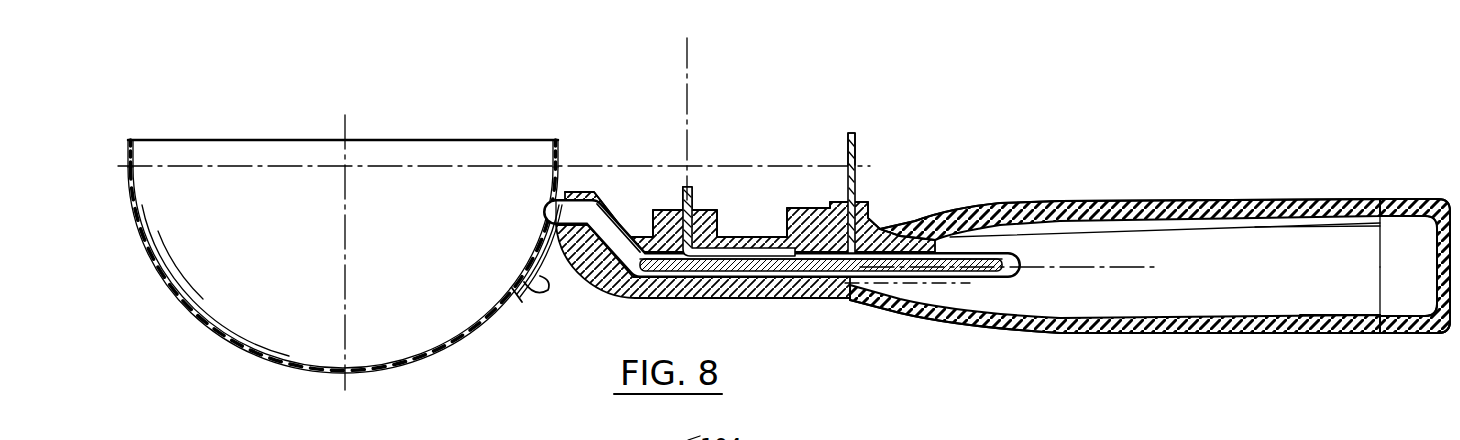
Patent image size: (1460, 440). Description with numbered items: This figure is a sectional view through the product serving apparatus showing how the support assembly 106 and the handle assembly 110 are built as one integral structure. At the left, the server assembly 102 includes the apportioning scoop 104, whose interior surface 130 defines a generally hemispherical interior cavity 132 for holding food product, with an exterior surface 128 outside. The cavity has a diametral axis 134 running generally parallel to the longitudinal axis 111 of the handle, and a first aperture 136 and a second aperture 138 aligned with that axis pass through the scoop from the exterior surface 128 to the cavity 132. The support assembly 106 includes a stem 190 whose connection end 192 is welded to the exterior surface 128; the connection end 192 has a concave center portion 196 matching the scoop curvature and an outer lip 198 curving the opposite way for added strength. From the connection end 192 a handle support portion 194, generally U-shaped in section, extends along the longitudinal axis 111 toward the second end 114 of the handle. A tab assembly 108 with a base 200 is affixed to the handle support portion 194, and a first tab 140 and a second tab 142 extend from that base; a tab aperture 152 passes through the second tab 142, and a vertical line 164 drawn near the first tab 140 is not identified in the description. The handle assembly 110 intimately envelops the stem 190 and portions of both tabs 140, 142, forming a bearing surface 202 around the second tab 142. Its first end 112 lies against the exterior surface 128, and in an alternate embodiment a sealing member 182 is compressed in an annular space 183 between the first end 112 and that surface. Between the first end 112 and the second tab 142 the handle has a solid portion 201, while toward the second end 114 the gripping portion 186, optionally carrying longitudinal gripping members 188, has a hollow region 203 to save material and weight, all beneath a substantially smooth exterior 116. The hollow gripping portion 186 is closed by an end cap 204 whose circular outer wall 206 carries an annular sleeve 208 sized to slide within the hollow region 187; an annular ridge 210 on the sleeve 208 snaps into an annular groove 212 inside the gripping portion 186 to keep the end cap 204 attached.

The server assembly 102 is at (290, 372).
The apportioning scoop 104 is at (386, 138).
The support assembly 106 is at (866, 192).
The tab assembly 108 is at (822, 284).
The handle assembly 110 is at (1002, 206).
The longitudinal axis 111 is at (1084, 306).
The first end 112 is at (591, 192).
The second end 114 is at (1418, 334).
The smooth exterior 116 is at (1166, 333).
The exterior surface 128 is at (412, 372).
The interior surface 130 is at (233, 336).
The interior cavity 132 is at (297, 224).
The diametral axis 134 is at (246, 167).
The first aperture 136 is at (136, 162).
The second aperture 138 is at (553, 163).
The first tab 140 is at (696, 190).
The second tab 142 is at (851, 133).
The tab aperture 152 is at (858, 160).
The vertical axis 164 is at (687, 53).
The sealing member 182 is at (563, 192).
The annular space 183 is at (512, 298).
The gripping portion 186 is at (1190, 200).
The hollow region 187 is at (1403, 214).
The longitudinal gripping members 188 is at (1259, 201).
The stem 190 is at (627, 299).
The connection end 192 is at (576, 286).
The handle support portion 194 is at (932, 268).
The concave center portion 196 is at (551, 258).
The outer lip 198 is at (551, 296).
The base 200 is at (750, 266).
The solid portion 201 is at (691, 292).
The bearing surface 202 is at (818, 208).
The hollow region 203 is at (1256, 276).
The end cap 204 is at (1437, 199).
The circular outer wall 206 is at (1438, 335).
The annular sleeve 208 is at (1396, 313).
The annular ridge 210 is at (1422, 200).
The annular groove 212 is at (1405, 334).